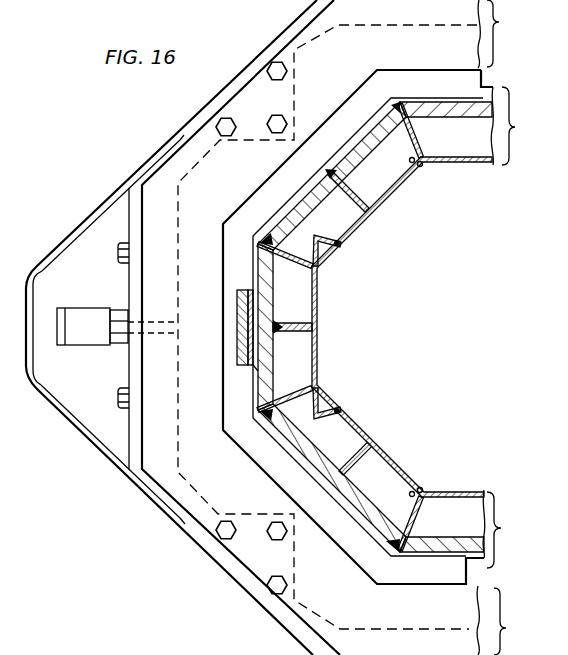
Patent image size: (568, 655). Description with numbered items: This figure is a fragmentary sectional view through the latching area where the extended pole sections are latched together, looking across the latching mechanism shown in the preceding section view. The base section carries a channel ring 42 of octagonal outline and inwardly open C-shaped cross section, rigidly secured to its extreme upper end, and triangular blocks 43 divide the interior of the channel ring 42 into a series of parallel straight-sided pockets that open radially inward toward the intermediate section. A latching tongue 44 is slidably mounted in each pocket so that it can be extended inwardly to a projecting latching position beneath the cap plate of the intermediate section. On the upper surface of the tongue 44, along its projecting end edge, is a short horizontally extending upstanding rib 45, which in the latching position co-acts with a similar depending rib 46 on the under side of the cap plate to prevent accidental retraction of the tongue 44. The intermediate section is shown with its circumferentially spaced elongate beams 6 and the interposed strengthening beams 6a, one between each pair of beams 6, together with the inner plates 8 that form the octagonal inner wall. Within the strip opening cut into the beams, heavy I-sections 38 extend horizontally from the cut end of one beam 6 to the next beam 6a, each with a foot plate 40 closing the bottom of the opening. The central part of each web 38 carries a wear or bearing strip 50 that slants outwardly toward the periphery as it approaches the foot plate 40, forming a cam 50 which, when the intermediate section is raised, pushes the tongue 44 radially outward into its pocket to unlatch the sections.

The elongate beams 6 is at (330, 190).
The strengthening beams 6a is at (302, 331).
The inner plates 8 is at (360, 222).
The I-section web 38 is at (432, 562).
The foot plate 40 is at (456, 145).
The channel ring 42 is at (503, 327).
The triangular blocks 43 is at (290, 73).
The latching tongue 44 is at (472, 80).
The upstanding rib 45 is at (251, 291).
The depending rib 46 is at (237, 327).
The wear strip and cam 50 is at (256, 366).